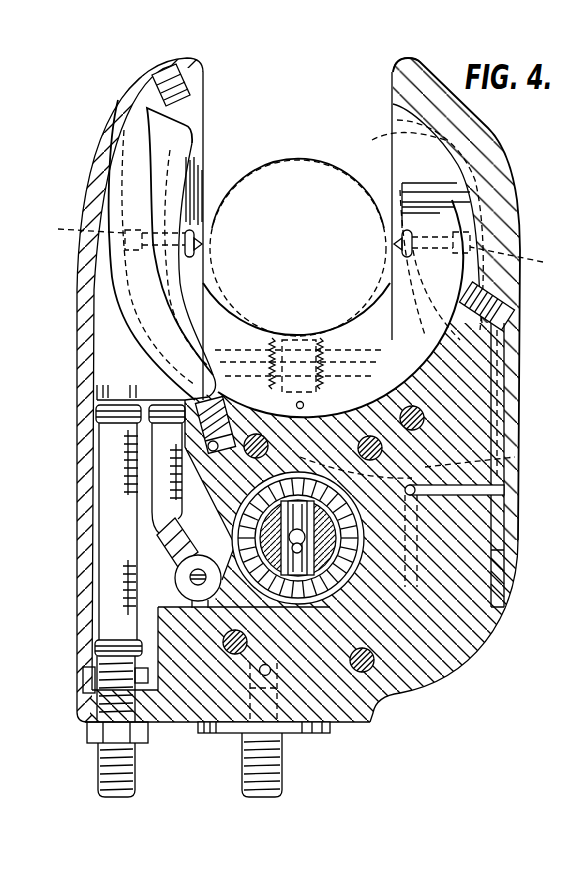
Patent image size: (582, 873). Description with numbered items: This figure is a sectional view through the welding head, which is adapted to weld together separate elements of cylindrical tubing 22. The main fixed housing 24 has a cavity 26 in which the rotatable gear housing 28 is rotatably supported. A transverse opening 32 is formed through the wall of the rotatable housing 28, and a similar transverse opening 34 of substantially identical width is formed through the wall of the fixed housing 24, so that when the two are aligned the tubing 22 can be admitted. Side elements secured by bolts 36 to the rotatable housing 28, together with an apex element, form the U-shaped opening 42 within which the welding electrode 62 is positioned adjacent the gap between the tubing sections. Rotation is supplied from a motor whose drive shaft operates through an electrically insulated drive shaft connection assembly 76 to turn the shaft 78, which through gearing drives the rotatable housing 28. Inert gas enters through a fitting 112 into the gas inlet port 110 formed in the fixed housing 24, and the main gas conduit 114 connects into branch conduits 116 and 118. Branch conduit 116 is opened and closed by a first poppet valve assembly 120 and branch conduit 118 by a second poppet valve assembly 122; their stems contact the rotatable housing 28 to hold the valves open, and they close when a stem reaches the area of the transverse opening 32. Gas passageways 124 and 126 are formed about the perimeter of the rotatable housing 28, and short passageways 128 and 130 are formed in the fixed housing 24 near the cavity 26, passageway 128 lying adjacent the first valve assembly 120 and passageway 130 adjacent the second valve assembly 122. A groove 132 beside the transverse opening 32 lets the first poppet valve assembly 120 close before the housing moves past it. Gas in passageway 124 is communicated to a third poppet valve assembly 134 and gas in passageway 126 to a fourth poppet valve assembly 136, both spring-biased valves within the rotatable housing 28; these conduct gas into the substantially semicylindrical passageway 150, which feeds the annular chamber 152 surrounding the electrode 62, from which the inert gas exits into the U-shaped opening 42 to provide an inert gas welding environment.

The cylindrical tubing 22 is at (287, 197).
The main fixed housing 24 is at (508, 220).
The cavity 26 is at (425, 138).
The rotatable gear housing 28 is at (200, 111).
The transverse opening 32 is at (393, 125).
The transverse opening 34 is at (393, 68).
The bolts 36 is at (299, 245).
The U-shaped opening 42 is at (297, 160).
The electrode 62 is at (305, 404).
The drive shaft connection assembly 76 is at (433, 643).
The shaft 78 is at (335, 572).
The gas inlet port 110 is at (290, 742).
The fitting 112 is at (303, 730).
The main gas conduit 114 is at (444, 631).
The branch conduit 116 is at (497, 426).
The branch conduit 118 is at (505, 458).
The first poppet valve assembly 120 is at (493, 290).
The second poppet valve assembly 122 is at (196, 448).
The gas passageway 124 is at (463, 173).
The gas passageway 126 is at (77, 300).
The short passageway 128 is at (490, 358).
The short passageway 130 is at (228, 402).
The groove 132 is at (388, 139).
The third poppet valve assembly 134 is at (420, 292).
The fourth poppet valve assembly 136 is at (200, 143).
The semicylindrical passageway 150 is at (245, 296).
The annular chamber 152 is at (345, 278).